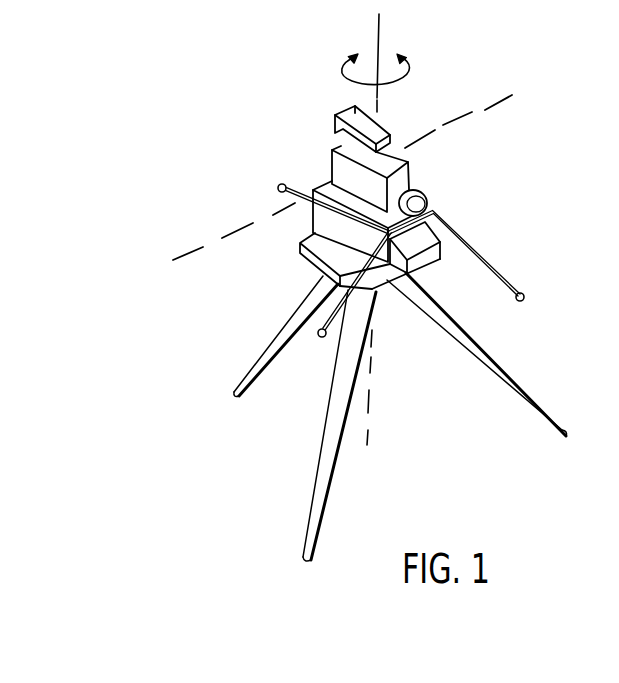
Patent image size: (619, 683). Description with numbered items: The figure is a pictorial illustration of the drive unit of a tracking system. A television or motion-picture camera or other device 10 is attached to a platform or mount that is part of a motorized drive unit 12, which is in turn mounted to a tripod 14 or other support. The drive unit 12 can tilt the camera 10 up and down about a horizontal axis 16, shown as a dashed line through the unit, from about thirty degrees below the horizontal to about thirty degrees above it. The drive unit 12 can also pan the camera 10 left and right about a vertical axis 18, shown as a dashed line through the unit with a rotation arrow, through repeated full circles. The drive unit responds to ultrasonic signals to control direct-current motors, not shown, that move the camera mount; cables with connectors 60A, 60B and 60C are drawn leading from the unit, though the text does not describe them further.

The camera 10 is at (312, 140).
The motorized drive unit 12 is at (448, 249).
The tripod 14 is at (511, 377).
The horizontal axis 16 is at (488, 107).
The vertical axis 18 is at (378, 33).
The cable connector A 60A is at (321, 337).
The cable connector B 60B is at (526, 294).
The cable connector C 60C is at (278, 187).